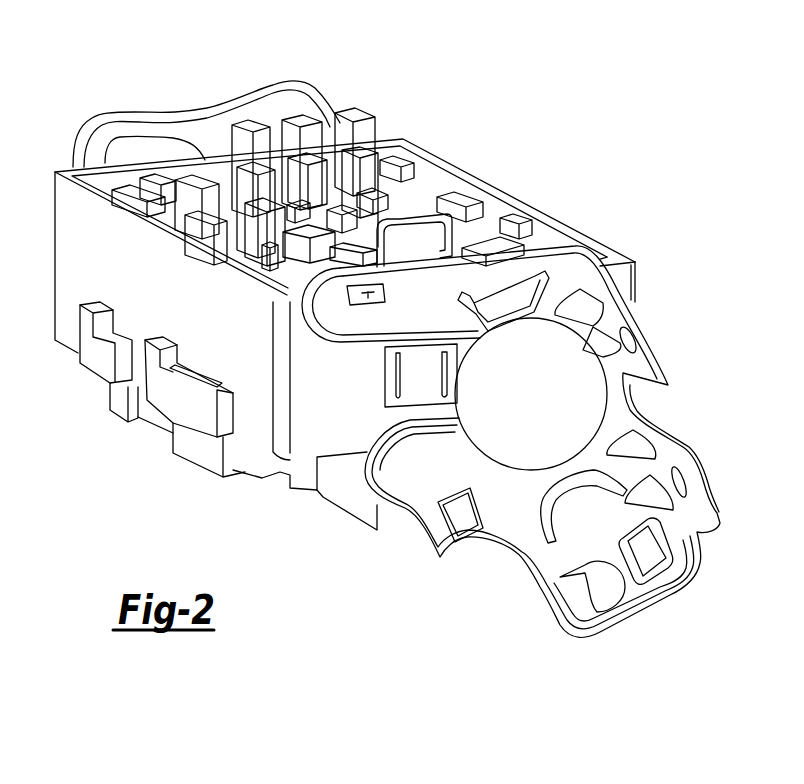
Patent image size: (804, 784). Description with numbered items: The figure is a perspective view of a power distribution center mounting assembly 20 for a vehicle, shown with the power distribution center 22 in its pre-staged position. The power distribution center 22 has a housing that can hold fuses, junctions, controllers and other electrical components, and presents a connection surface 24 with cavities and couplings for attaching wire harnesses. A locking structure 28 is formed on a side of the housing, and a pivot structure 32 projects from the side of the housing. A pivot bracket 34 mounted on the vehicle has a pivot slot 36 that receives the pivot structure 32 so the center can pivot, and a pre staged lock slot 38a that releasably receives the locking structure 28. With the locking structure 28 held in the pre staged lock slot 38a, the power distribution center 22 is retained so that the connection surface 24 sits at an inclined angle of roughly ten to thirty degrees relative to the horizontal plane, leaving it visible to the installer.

The power distribution center mounting assembly 20 is at (385, 103).
The power distribution center 22 is at (555, 223).
The connection surface 24 is at (242, 472).
The locking structure 28 is at (377, 300).
The pivot structure 32 is at (567, 411).
The pivot bracket 34 is at (547, 597).
The pivot slot 36 is at (420, 388).
The pre staged lock slot 38a is at (367, 297).